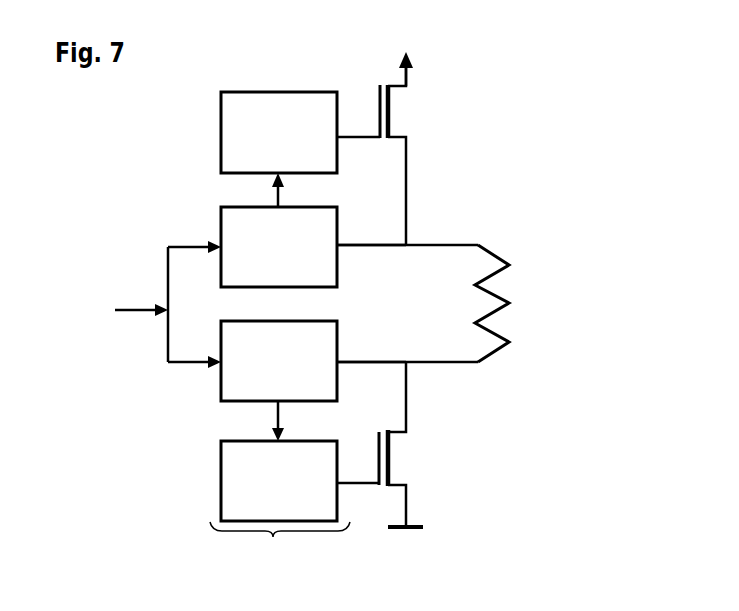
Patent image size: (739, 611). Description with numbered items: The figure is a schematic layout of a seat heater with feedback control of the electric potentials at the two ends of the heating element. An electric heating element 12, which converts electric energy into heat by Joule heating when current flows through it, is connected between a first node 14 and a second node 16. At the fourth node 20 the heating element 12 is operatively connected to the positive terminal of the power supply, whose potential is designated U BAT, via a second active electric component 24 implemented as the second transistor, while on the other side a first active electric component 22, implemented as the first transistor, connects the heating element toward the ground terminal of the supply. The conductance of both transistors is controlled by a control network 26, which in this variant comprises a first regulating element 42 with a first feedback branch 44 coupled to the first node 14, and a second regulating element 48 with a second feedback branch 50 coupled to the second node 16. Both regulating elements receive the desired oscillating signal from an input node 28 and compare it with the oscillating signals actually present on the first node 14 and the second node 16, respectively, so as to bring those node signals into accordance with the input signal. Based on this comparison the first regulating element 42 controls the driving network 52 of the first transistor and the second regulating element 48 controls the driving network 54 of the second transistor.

The electric heating element 12 is at (499, 293).
The first node 14 is at (418, 356).
The second node 16 is at (433, 243).
The fourth node 20 is at (408, 72).
The first active electric component 22 is at (436, 419).
The second active electric component 24 is at (364, 81).
The control network 26 is at (280, 548).
The input node 28 is at (168, 289).
The first regulating element 42 is at (221, 389).
The first feedback branch 44 is at (356, 360).
The second regulating element 48 is at (221, 218).
The second feedback branch 50 is at (354, 248).
The driving network 52 is at (221, 470).
The driving network 54 is at (221, 126).